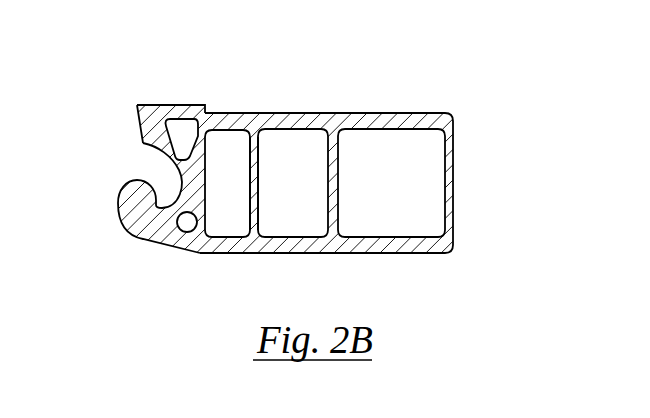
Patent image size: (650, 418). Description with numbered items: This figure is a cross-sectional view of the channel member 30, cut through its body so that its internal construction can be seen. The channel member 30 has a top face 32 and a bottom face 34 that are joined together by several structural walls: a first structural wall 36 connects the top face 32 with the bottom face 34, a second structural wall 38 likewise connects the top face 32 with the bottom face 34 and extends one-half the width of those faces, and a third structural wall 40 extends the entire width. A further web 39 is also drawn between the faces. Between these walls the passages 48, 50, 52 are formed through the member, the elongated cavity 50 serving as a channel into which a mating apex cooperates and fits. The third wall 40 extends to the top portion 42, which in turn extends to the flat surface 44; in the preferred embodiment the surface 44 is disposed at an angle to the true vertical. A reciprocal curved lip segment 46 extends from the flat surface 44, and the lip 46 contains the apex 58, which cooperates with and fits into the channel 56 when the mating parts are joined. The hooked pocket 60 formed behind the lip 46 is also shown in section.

The channel member 30 is at (199, 273).
The top face 32 is at (389, 113).
The bottom face 34 is at (367, 253).
The first structural wall 36 is at (448, 180).
The second structural wall 38 is at (338, 155).
The web 39 is at (262, 198).
The third structural wall 40 is at (210, 172).
The top portion 42 is at (168, 104).
The flat surface 44 is at (138, 115).
The reciprocal curved lip segment 46 is at (118, 217).
The passage 48 is at (400, 150).
The elongated cavity 50 is at (288, 162).
The passage 52 is at (231, 219).
The channel 56 is at (44, 11).
The apex 58 is at (138, 181).
The hook 60 is at (160, 170).